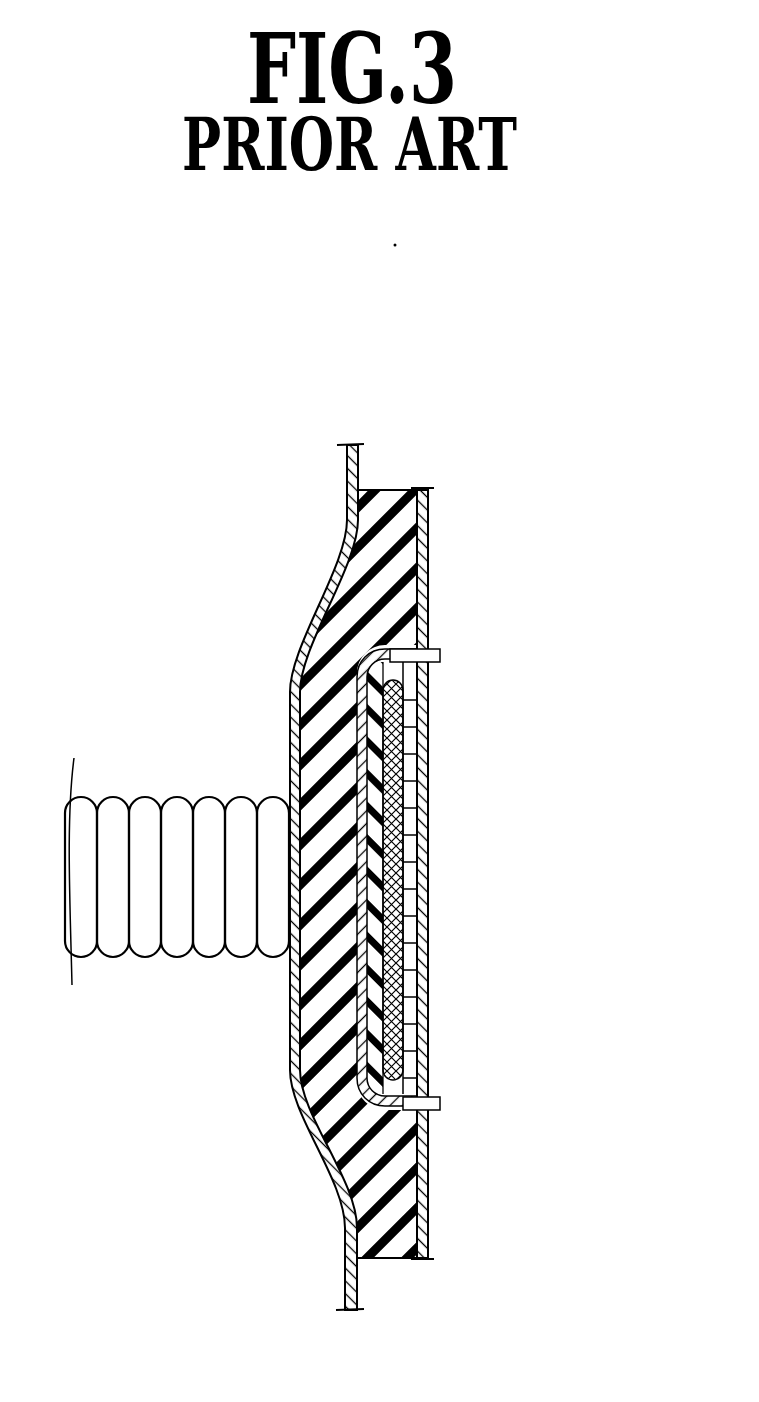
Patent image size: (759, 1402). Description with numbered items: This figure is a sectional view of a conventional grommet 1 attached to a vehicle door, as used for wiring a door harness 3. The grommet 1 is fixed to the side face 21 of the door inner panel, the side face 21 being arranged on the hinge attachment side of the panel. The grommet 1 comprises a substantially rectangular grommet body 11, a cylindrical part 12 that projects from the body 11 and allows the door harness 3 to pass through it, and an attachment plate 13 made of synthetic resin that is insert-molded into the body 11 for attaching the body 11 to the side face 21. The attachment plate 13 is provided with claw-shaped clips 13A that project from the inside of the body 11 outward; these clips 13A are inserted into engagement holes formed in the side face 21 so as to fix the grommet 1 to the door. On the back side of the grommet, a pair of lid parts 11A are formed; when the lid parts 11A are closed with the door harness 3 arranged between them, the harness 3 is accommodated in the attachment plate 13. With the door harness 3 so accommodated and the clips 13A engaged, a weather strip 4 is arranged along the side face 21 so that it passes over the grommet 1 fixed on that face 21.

The grommet 1 is at (335, 1003).
The door harness 3 is at (392, 895).
The weather strip 4 is at (333, 1067).
The grommet body 11 is at (340, 962).
The lid parts 11A is at (428, 795).
The cylindrical part 12 is at (160, 796).
The attachment plate 13 is at (426, 1026).
The clips 13A is at (427, 776).
The side face 21 is at (428, 554).